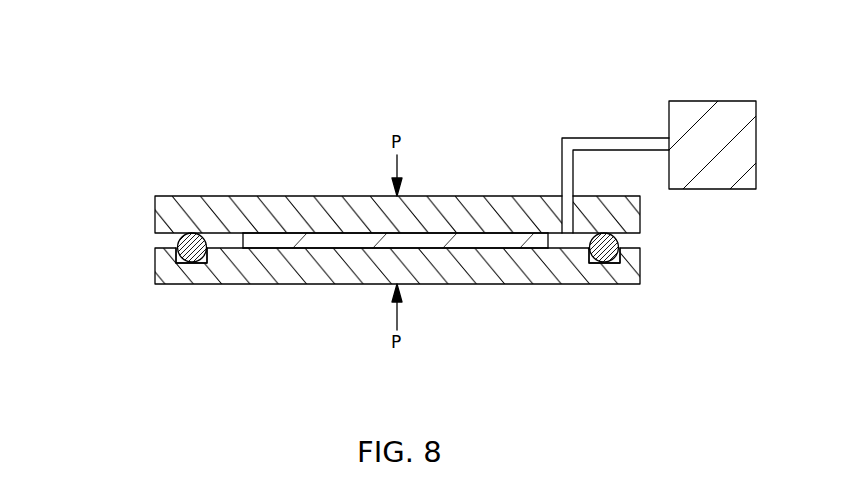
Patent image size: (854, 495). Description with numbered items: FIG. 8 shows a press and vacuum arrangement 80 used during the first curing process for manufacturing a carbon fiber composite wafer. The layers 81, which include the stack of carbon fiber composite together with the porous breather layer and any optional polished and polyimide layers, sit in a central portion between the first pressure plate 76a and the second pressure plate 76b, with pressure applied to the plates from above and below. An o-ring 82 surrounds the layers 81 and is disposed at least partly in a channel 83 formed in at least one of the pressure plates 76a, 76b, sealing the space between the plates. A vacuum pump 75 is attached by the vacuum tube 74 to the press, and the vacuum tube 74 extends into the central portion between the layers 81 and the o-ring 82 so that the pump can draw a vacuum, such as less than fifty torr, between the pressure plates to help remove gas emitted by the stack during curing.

The pressure bonding assembly 80 is at (108, 55).
The vacuum tube 74 is at (565, 138).
The vacuum pump 75 is at (748, 135).
The first pressure plate 76a is at (240, 205).
The second pressure plate 76b is at (506, 277).
The layers 81 is at (330, 242).
The o-ring 82 is at (180, 240).
The channel 83 is at (178, 264).